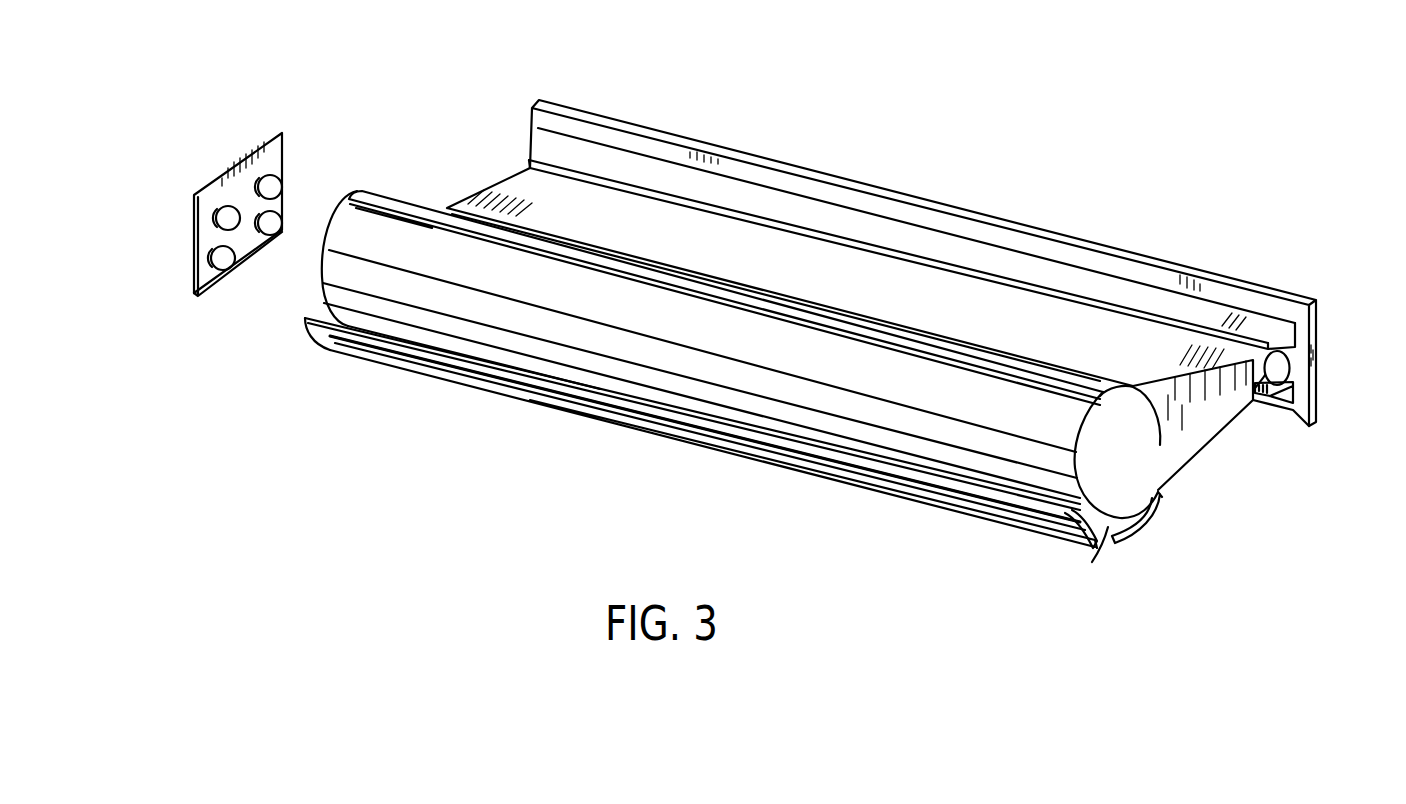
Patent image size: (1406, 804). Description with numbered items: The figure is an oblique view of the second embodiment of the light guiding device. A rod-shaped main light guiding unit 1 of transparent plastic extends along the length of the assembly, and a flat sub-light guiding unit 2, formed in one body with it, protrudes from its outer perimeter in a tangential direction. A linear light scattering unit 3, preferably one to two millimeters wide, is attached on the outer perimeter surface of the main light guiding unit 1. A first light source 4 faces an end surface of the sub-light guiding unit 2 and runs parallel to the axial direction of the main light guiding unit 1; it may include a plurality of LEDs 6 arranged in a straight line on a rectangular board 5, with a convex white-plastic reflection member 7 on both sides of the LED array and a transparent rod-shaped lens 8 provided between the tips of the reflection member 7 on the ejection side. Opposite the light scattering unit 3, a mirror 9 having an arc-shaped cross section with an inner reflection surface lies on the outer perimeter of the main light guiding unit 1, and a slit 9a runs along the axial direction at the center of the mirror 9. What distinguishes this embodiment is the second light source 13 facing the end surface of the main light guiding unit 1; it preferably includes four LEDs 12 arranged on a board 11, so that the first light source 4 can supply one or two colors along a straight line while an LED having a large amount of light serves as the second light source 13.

The main light guiding unit 1 is at (741, 314).
The sub-light guiding unit 2 is at (1205, 432).
The light scattering unit 3 is at (398, 205).
The light source 4 is at (931, 180).
The rectangular board 5 is at (954, 286).
The LED 6 is at (1306, 354).
The reflection member 7 is at (1115, 288).
The rod-shaped lens 8 is at (1273, 372).
The mirror 9 is at (752, 478).
The slit 9a is at (1116, 553).
The board 11 is at (191, 268).
The LED 12 is at (276, 186).
The second light source 13 is at (226, 201).